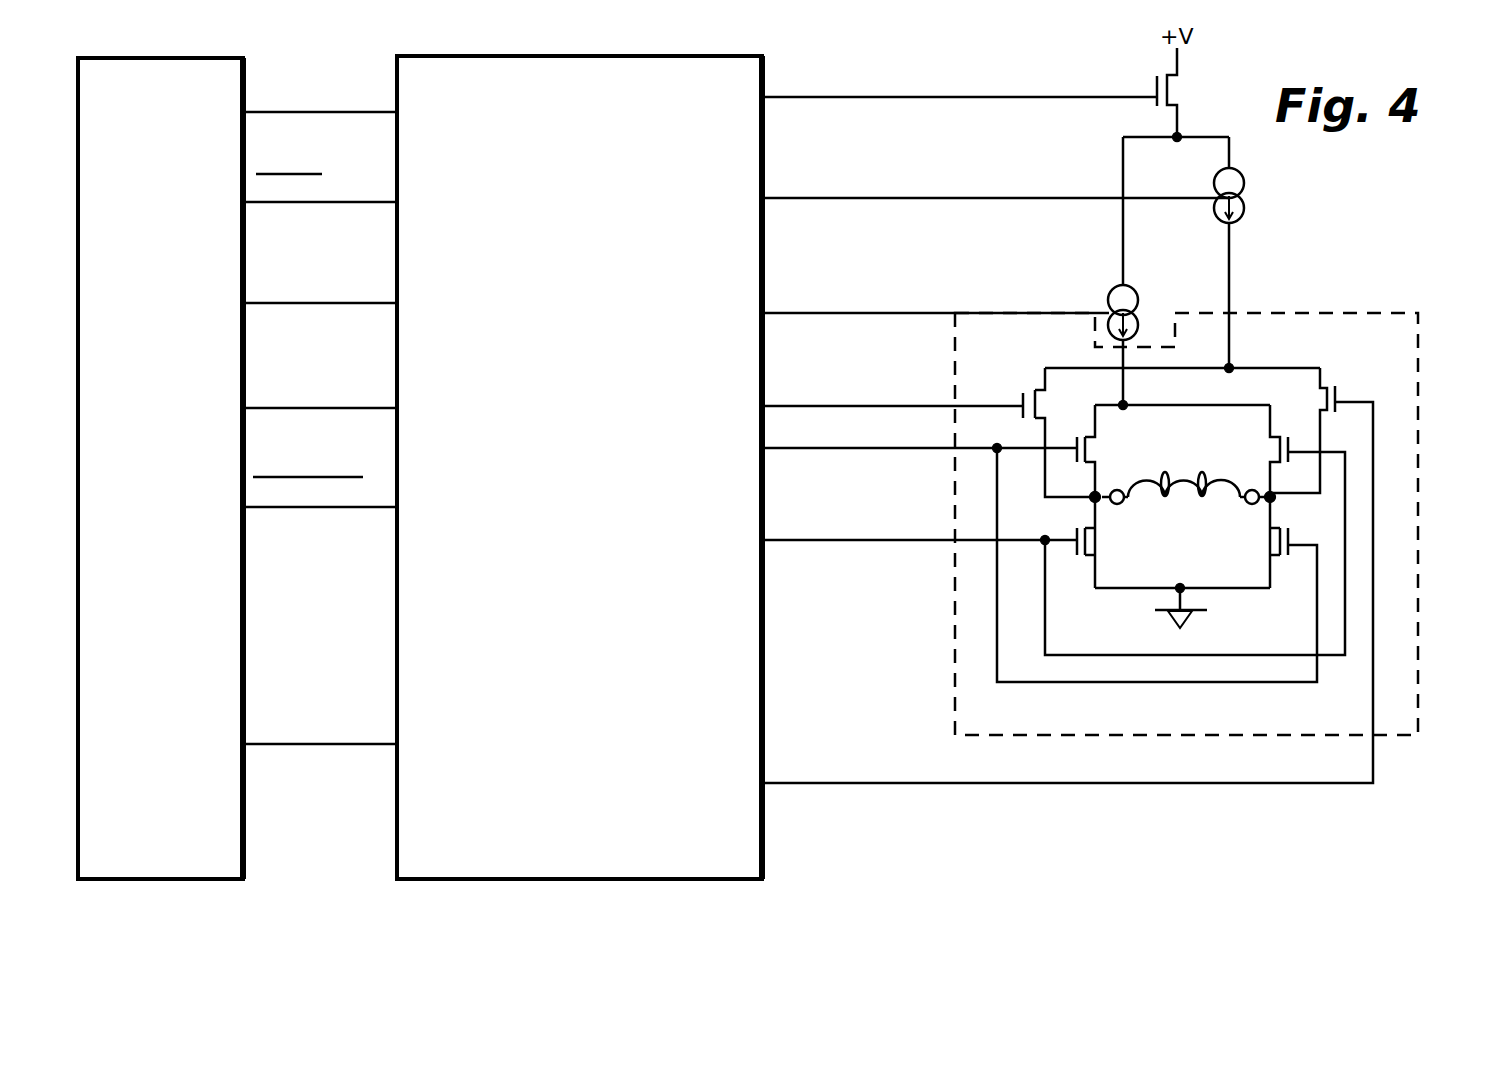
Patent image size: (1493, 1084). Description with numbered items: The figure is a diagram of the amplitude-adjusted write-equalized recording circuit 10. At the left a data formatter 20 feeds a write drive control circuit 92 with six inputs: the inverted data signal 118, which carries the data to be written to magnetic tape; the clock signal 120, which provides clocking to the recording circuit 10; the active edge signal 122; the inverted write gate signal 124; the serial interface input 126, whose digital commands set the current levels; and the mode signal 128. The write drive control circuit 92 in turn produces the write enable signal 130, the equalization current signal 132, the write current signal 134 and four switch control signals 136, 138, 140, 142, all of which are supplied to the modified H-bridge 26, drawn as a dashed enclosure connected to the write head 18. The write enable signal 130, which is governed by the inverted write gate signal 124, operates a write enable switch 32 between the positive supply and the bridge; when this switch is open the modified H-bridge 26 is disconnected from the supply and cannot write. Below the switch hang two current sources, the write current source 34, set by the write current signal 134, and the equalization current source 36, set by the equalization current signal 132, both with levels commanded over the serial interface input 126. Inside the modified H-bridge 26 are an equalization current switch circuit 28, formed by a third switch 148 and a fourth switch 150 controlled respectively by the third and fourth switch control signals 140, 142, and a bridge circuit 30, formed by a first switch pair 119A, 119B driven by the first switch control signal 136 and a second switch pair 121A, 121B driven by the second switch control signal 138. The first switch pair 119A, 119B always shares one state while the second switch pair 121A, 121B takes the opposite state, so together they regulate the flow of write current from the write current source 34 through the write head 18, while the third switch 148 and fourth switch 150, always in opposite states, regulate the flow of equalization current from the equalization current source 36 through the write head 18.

The amplitude adjusted write equalized recording circuit 10 is at (992, 839).
The write head 18 is at (1175, 466).
The data formatter 20 is at (243, 78).
The modified H-bridge 26 is at (1378, 302).
The equalization current switch circuit 28 is at (1260, 366).
The bridge circuit 30 is at (1090, 505).
The write enable switch 32 is at (1180, 100).
The write current source 34 is at (1142, 290).
The equalization current source 36 is at (1245, 212).
The write drive control 92 is at (398, 838).
The INVERTED_DATA signal 118 is at (320, 202).
The first switch pair switch 119A is at (1098, 462).
The first switch pair switch 119B is at (1282, 562).
The CLOCK signal 120 is at (320, 303).
The second switch pair switch 121A is at (1276, 444).
The second switch pair switch 121B is at (1081, 562).
The ACTIVE EDGE signal 122 is at (320, 397).
The INVERTED_WR_GATE signal 124 is at (320, 506).
The SERIAL INTERFACE input 126 is at (320, 733).
The MODE signal 128 is at (320, 112).
The WRITE ENABLE signal 130 is at (959, 96).
The I_EQ signal 132 is at (995, 198).
The I_W signal 134 is at (935, 313).
The S1 signal 136 is at (919, 436).
The S2 signal 138 is at (919, 540).
The S3 signal 140 is at (892, 391).
The S4 signal 142 is at (1067, 607).
The third switch 148 is at (1031, 382).
The fourth switch 150 is at (1329, 386).